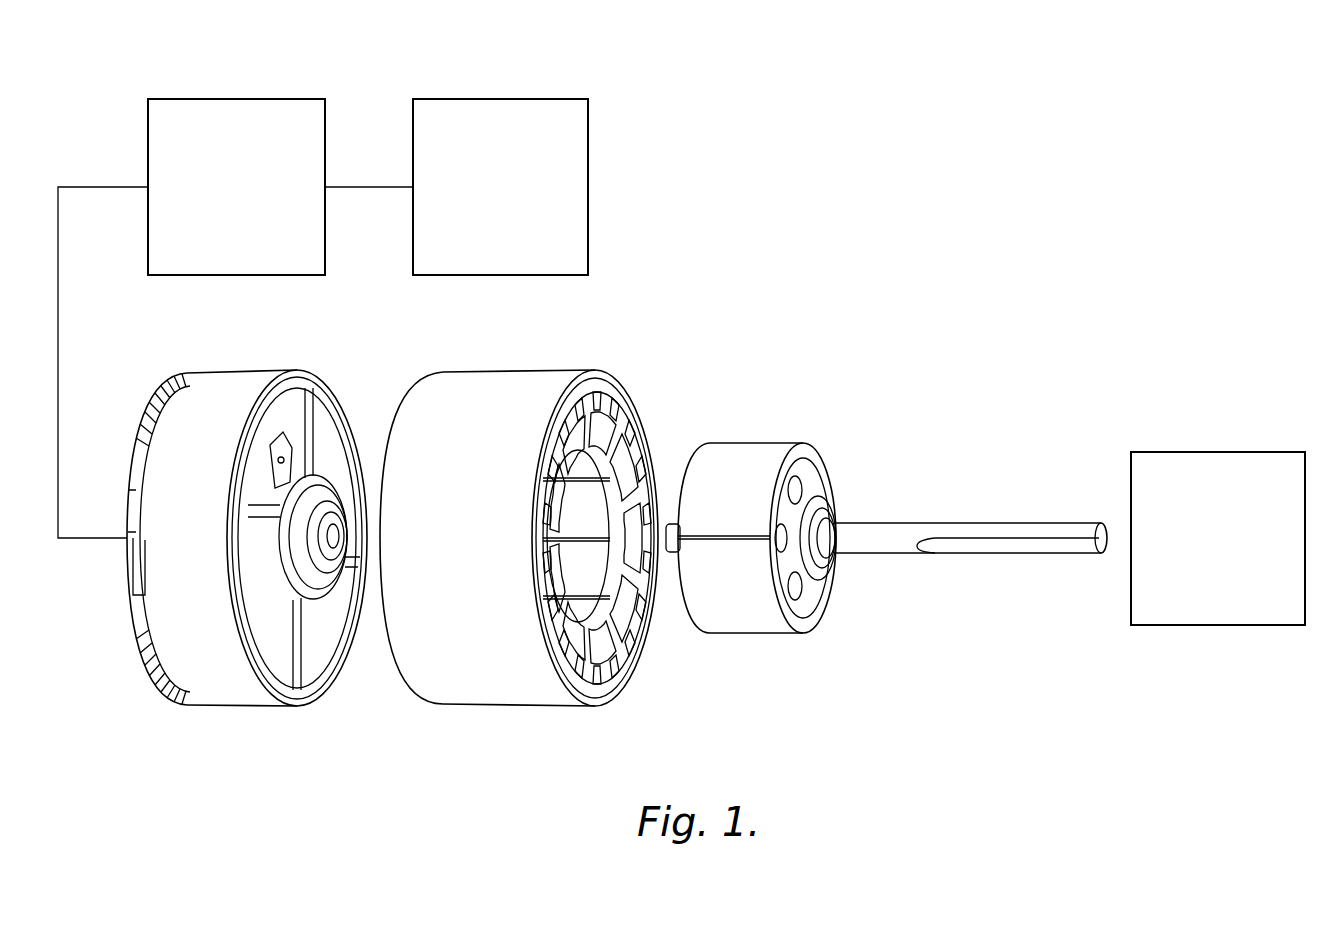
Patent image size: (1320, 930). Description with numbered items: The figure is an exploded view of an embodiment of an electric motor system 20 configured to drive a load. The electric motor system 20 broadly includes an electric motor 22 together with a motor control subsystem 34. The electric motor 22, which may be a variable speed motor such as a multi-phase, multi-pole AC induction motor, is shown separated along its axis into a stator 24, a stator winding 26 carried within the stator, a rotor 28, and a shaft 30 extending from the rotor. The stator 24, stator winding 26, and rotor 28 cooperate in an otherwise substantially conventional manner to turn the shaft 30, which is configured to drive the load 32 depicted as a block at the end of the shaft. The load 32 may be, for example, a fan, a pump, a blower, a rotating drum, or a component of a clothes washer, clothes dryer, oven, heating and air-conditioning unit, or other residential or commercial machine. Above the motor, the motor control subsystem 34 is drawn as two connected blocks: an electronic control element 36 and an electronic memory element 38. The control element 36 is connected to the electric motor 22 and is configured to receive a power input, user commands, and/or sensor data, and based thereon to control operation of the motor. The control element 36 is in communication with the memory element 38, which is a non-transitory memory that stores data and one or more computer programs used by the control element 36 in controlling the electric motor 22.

The electric motor system 20 is at (1018, 368).
The electric motor 22 is at (650, 346).
The stator 24 is at (507, 692).
The stator winding 26 is at (604, 625).
The rotor 28 is at (760, 458).
The shaft 30 is at (968, 547).
The load 32 is at (1200, 553).
The motor control subsystem 34 is at (334, 277).
The electronic control element 36 is at (217, 200).
The electronic memory element 38 is at (486, 200).